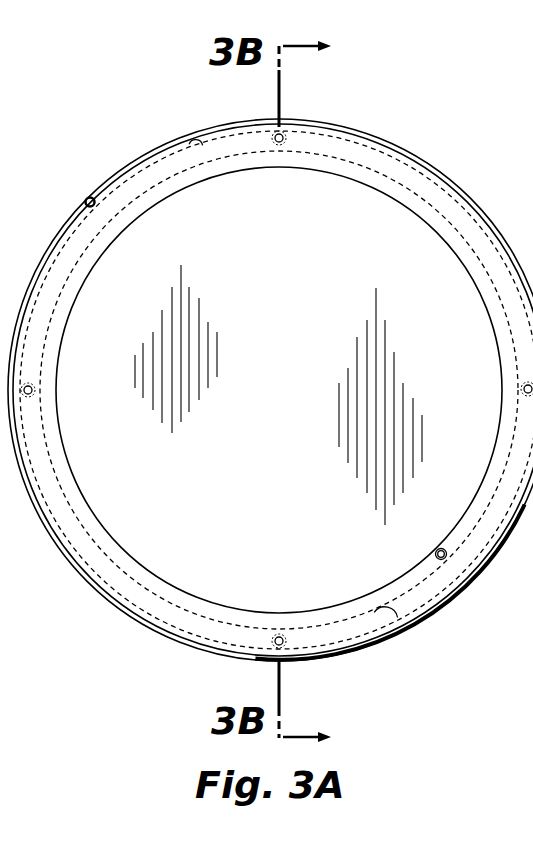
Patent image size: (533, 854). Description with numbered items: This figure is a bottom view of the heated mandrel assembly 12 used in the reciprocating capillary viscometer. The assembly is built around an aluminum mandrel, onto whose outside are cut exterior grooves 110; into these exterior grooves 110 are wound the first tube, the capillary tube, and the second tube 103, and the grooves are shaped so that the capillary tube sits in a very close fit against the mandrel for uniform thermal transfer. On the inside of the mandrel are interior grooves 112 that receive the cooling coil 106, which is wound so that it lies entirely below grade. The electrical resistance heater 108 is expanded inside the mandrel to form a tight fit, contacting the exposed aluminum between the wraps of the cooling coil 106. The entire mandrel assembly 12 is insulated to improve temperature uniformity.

The heated mandrel assembly 12 is at (415, 145).
The second tube 103 is at (178, 648).
The cooling coil 106 is at (160, 593).
The electrical resistance heater 108 is at (296, 416).
The exterior grooves 110 is at (201, 140).
The interior grooves 112 is at (397, 612).